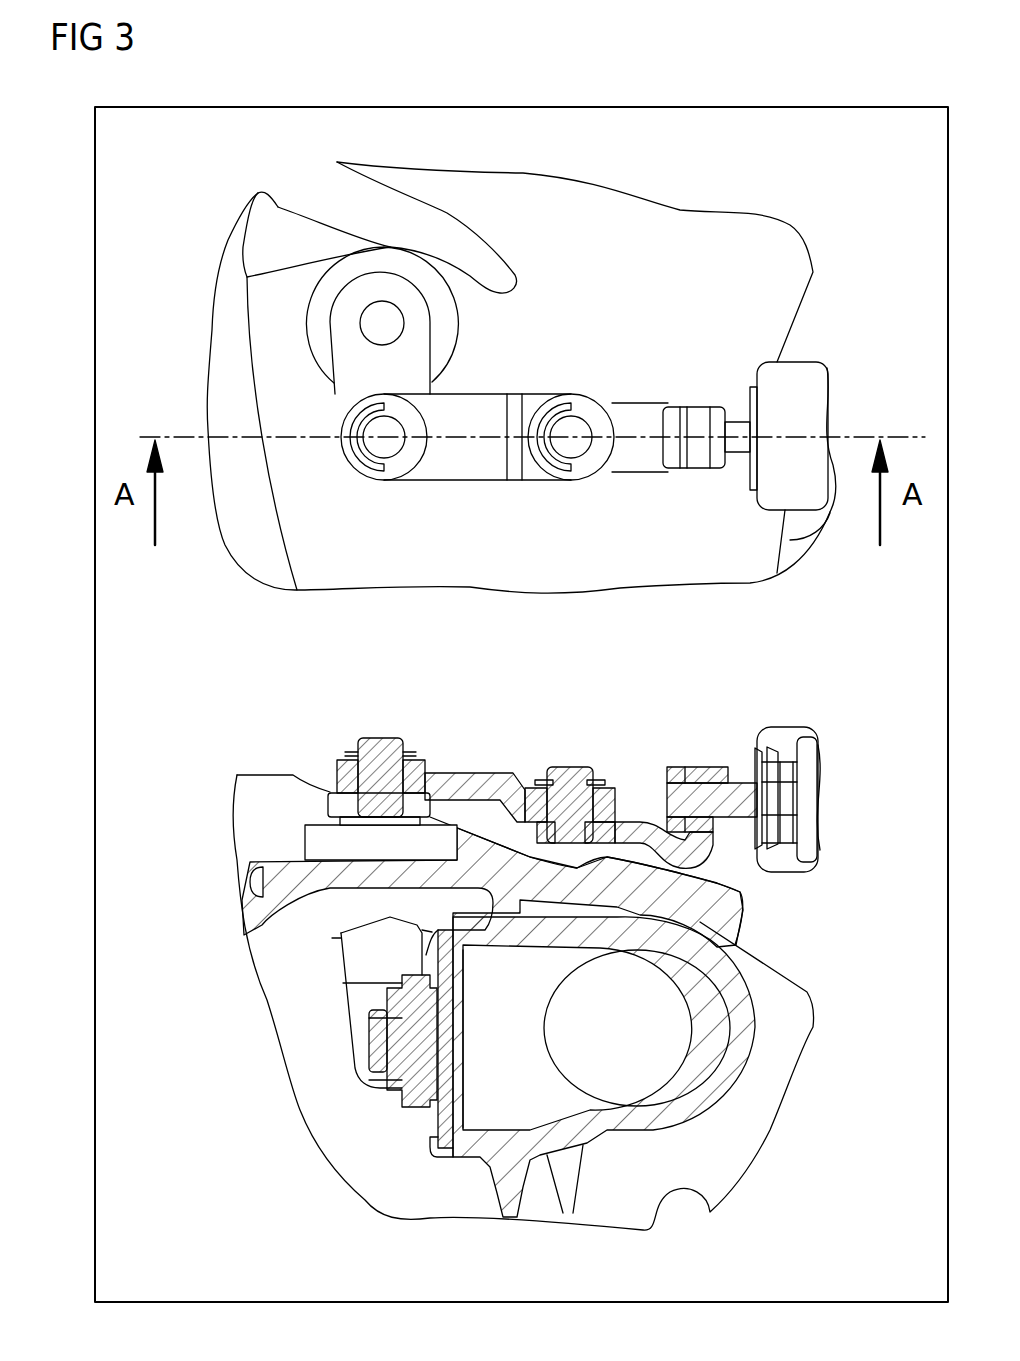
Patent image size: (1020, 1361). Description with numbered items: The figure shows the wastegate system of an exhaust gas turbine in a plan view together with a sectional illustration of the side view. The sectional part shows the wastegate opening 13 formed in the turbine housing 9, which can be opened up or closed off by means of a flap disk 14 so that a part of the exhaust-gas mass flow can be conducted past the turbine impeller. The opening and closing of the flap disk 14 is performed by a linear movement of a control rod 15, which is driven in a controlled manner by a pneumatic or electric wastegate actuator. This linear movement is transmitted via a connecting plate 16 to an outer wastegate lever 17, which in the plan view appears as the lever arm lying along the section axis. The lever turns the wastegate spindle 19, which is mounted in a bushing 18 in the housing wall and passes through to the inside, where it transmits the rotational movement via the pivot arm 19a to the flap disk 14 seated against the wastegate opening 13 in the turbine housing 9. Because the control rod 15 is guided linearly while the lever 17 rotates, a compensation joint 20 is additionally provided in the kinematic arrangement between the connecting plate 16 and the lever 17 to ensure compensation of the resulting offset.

The turbine housing 9 is at (733, 1027).
The wastegate opening 13 is at (488, 1043).
The flap disk 14 is at (405, 1055).
The control rod 15 is at (740, 445).
The connecting plate 16 is at (473, 453).
The outer wastegate lever 17 is at (350, 345).
The bushing 18 is at (375, 958).
The wastegate spindle 19 is at (382, 318).
The pivot arm 19a is at (362, 1020).
The compensation joint 20 is at (570, 442).